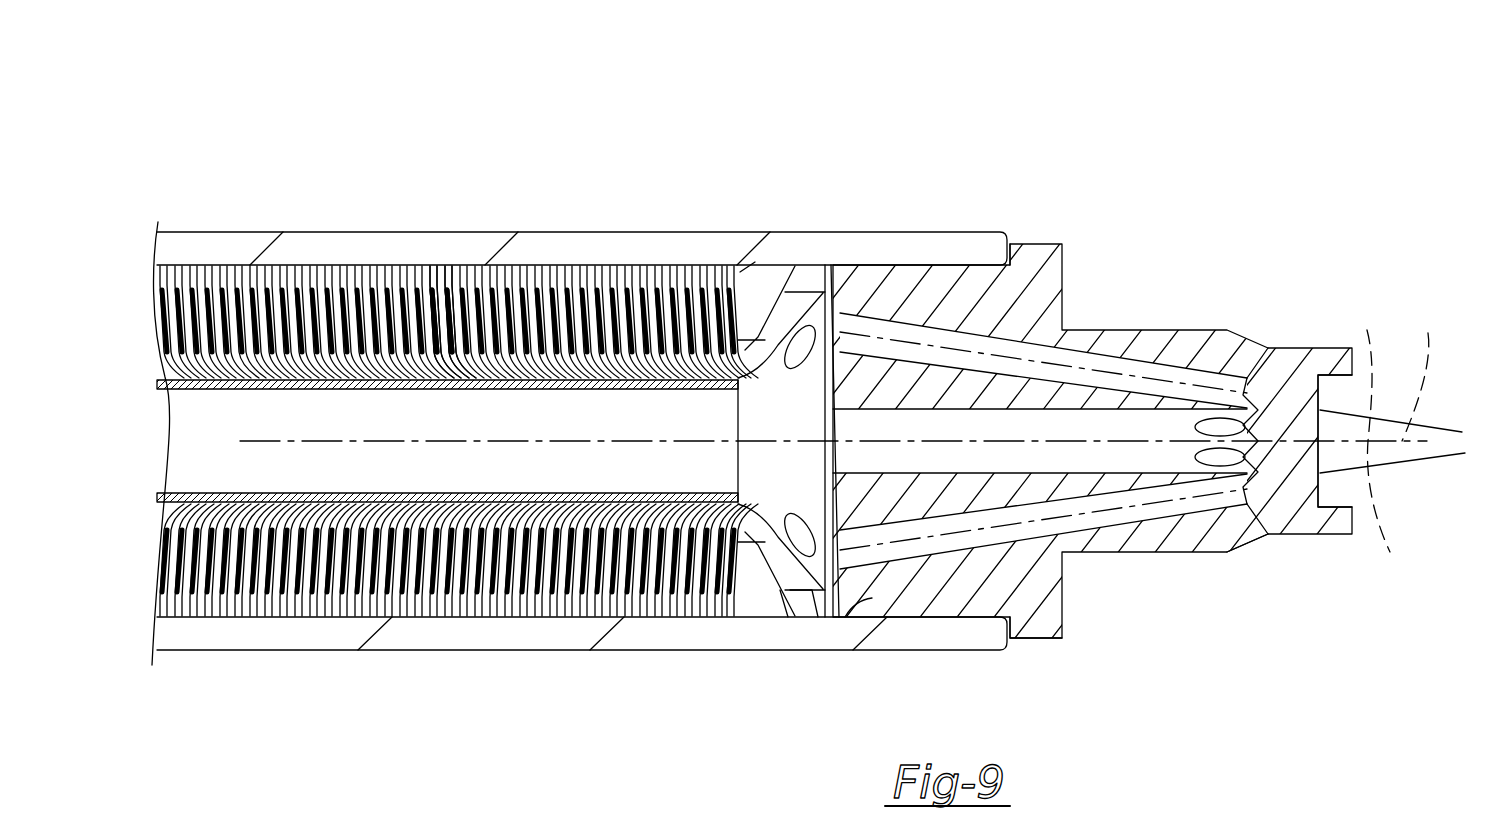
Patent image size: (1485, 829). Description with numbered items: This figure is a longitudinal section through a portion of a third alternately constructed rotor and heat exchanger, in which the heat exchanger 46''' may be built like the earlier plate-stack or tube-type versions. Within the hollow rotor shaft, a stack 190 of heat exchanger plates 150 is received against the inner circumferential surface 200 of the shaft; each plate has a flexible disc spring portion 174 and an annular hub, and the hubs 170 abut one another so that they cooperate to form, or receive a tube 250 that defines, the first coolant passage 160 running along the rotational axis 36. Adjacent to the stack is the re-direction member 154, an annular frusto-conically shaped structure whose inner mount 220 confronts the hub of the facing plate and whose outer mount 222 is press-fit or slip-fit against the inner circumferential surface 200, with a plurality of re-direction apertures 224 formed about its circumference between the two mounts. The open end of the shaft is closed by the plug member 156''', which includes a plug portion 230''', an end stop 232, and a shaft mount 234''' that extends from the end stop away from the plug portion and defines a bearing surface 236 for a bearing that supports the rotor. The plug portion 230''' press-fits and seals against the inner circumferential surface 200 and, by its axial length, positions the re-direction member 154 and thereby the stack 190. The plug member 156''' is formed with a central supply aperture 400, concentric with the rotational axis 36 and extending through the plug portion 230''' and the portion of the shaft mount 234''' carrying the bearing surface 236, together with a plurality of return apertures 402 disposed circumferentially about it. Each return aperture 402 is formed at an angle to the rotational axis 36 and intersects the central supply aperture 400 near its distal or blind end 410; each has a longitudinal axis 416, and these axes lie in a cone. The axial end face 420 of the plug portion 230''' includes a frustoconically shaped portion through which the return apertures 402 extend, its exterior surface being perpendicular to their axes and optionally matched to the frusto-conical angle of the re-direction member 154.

The heat exchanger 46''' is at (162, 362).
The heat exchanger plates 150 is at (296, 275).
The disc spring portion 174 is at (452, 300).
The stack 190 is at (738, 276).
The plug member 156''' is at (1290, 331).
The return apertures 402 is at (1075, 355).
The central supply aperture 400 is at (1138, 432).
The blind end 410 is at (1262, 437).
The longitudinal axis 416 is at (1370, 330).
The rotational axis 36 is at (1428, 333).
The hubs 170 is at (258, 510).
The first coolant passage 160 is at (378, 432).
The tube 250 is at (590, 386).
The re-direction apertures 224 is at (803, 360).
The inner mount 220 is at (732, 515).
The inner circumferential surface 200 is at (300, 607).
The re-direction member 154 is at (793, 605).
The outer mount 222 is at (790, 603).
The axial end face 420 is at (860, 603).
The plug portion 230''' is at (982, 466).
The end stop 232 is at (1045, 627).
The shaft mount 234''' is at (1271, 500).
The bearing surface 236 is at (1212, 556).